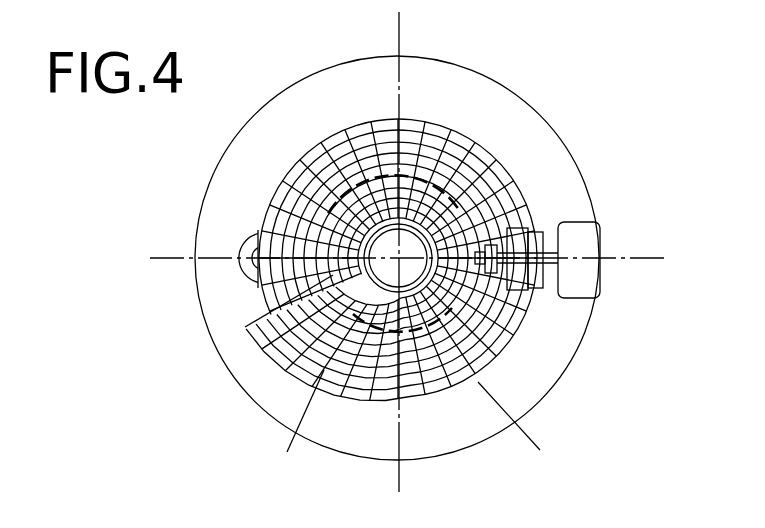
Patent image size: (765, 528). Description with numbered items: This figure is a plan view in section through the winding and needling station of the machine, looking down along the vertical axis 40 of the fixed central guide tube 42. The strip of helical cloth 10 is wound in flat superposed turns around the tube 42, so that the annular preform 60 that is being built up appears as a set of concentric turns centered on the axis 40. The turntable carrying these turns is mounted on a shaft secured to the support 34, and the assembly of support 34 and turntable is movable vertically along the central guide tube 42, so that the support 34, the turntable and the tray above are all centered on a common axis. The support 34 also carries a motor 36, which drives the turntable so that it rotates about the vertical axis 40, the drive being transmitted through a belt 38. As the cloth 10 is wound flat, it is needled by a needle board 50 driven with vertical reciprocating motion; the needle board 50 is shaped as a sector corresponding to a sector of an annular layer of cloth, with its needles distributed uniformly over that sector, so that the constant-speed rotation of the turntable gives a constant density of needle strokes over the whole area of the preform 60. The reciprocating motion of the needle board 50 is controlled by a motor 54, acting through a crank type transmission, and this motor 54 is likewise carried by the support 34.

The strip of helical cloth 10 is at (296, 428).
The support 34 is at (512, 117).
The motor 36 is at (233, 244).
The belt 38 is at (275, 195).
The vertical axis 40 is at (526, 427).
The central guide tube 42 is at (418, 218).
The needle board 50 is at (505, 335).
The motor 54 is at (577, 238).
The preform 60 is at (512, 188).